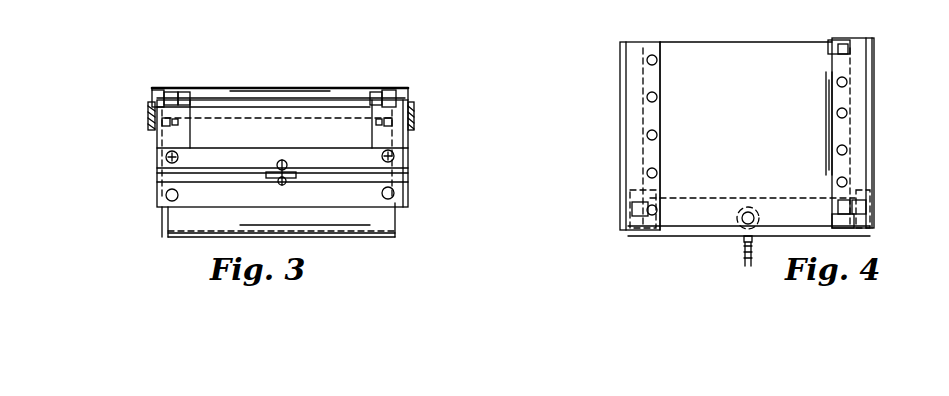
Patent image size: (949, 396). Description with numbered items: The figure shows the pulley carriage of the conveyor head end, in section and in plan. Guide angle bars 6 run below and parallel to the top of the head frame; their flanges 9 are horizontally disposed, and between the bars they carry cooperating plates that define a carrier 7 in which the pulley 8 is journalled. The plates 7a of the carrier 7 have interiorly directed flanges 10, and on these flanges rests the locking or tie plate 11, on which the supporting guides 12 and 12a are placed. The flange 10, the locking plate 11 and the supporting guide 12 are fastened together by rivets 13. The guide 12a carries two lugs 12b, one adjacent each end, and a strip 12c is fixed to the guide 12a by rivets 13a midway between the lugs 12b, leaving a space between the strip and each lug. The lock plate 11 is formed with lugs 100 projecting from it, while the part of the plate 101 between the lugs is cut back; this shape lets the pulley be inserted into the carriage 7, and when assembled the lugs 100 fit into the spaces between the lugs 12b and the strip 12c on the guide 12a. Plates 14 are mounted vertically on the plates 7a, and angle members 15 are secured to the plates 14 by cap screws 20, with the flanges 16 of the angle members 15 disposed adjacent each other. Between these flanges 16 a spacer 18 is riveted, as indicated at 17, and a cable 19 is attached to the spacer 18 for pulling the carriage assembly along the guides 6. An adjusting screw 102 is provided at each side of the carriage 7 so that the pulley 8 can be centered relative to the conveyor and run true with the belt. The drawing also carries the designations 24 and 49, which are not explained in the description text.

In FIG. 3, the guide angle bars 6 is at (148, 112).
In FIG. 3, the carrier 7 is at (150, 147).
In FIG. 3, the plates of the carrier 7a is at (160, 162).
In FIG. 4, the plates of the carrier 7a is at (622, 124).
In FIG. 3, the pulley 8 is at (160, 225).
In FIG. 3, the flanges 9 is at (158, 92).
In FIG. 3, the interiorly directed flanges 10 is at (176, 98).
In FIG. 3, the locking plate 11 is at (266, 100).
In FIG. 4, the locking plate 11 is at (746, 66).
In FIG. 3, the supporting guide 12 is at (168, 96).
In FIG. 4, the supporting guide 12 is at (631, 78).
In FIG. 3, the supporting guide 12a is at (388, 98).
In FIG. 4, the supporting guide 12a is at (856, 62).
In FIG. 4, the lugs 12b is at (838, 50).
In FIG. 4, the strip 12c is at (828, 105).
In FIG. 3, the rivets 13 is at (190, 95).
In FIG. 4, the rivets 13 is at (656, 58).
In FIG. 3, the rivets 13a is at (375, 95).
In FIG. 4, the rivets 13a is at (848, 150).
In FIG. 3, the plates 14 is at (182, 131).
In FIG. 4, the plates 14 is at (656, 192).
In FIG. 3, the angle members 15 is at (355, 192).
In FIG. 4, the angle members 15 is at (698, 202).
In FIG. 3, the flanges 16 is at (222, 185).
In FIG. 3, the rivet 17 is at (287, 165).
In FIG. 4, the rivet 17 is at (744, 212).
In FIG. 3, the spacer 18 is at (278, 168).
In FIG. 4, the spacer 18 is at (752, 200).
In FIG. 3, the cable 19 is at (290, 182).
In FIG. 4, the cable 19 is at (746, 266).
In FIG. 3, the cap screws 20 is at (166, 196).
In FIG. 4, the cap screws 20 is at (642, 214).
In FIG. 3, the tray bottom 24 is at (352, 238).
In FIG. 3, the lid surface 49 is at (305, 87).
In FIG. 4, the lugs 100 is at (842, 50).
In FIG. 4, the part of the plate 101 is at (826, 130).
In FIG. 3, the adjusting screw 102 is at (178, 122).